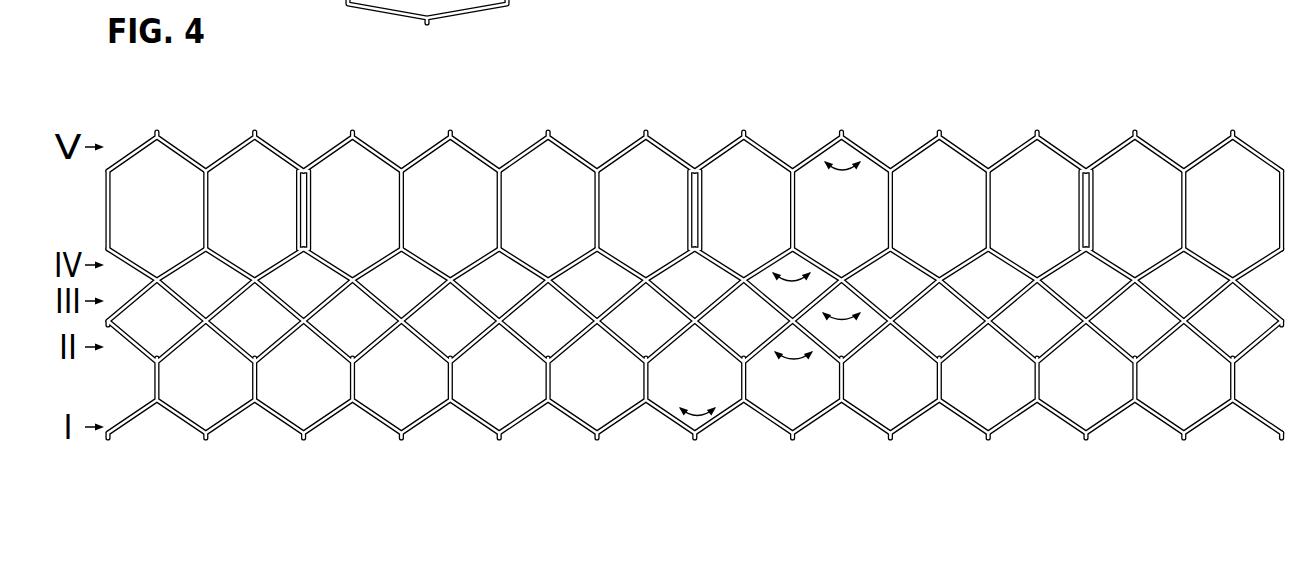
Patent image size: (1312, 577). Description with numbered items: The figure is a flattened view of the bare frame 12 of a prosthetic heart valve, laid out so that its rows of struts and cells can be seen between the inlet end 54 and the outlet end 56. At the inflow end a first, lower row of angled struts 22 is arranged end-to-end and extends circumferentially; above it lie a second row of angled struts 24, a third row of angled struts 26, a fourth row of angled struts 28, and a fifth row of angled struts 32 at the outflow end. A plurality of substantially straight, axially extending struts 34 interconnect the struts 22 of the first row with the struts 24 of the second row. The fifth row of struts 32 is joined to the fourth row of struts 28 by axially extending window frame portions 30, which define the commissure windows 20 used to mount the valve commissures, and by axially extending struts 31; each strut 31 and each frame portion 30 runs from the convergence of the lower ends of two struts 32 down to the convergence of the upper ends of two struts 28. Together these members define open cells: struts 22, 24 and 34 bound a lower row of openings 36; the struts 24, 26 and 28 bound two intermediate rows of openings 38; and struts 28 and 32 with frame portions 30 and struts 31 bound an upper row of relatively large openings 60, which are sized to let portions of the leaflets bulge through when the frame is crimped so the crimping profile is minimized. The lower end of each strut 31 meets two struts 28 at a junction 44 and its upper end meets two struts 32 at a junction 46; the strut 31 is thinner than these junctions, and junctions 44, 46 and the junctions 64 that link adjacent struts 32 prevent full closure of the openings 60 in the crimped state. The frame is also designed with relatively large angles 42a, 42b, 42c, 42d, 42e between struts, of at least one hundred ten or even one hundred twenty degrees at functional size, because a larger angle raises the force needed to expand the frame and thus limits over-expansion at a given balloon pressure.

The frame 12 is at (990, 93).
The commissure window 20 is at (312, 218).
The angled strut 22 is at (278, 418).
The angled strut 24 is at (128, 345).
The angled strut 26 is at (178, 298).
The angled strut 28 is at (125, 257).
The window frame portion 30 is at (308, 182).
The axial strut 31 is at (110, 195).
The angled strut 32 is at (135, 151).
The axially extending strut 34 is at (355, 383).
The opening 36 is at (511, 400).
The opening 38 is at (507, 265).
The angle 42a is at (861, 161).
The angle 42b is at (813, 270).
The angle 42c is at (843, 321).
The angle 42d is at (799, 358).
The angle 42e is at (719, 402).
The junction 44 is at (600, 247).
The junction 46 is at (600, 175).
The inlet end 54 is at (1088, 437).
The outlet end 56 is at (1139, 132).
The opening 60 is at (563, 170).
The junction 64 is at (312, 190).